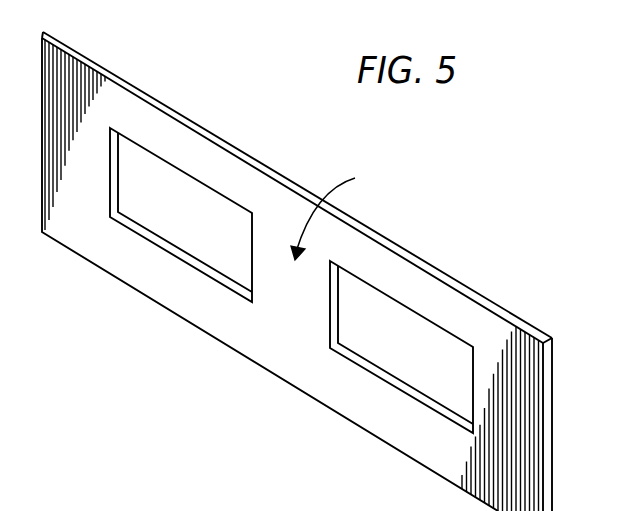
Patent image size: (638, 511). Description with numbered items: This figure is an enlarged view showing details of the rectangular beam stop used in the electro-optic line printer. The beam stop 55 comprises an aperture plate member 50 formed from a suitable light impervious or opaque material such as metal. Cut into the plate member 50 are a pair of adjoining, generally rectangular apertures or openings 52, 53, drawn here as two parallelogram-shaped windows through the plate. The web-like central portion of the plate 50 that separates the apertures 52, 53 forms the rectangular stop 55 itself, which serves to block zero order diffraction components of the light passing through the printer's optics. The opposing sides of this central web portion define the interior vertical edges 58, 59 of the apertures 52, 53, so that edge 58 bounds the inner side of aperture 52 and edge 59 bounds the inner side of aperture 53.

The aperture plate member 50 is at (365, 430).
The rectangular aperture 52 is at (425, 348).
The rectangular aperture 53 is at (168, 185).
The rectangular beam stop 55 is at (388, 191).
The interior vertical edge 58 is at (337, 312).
The interior vertical edge 59 is at (251, 231).